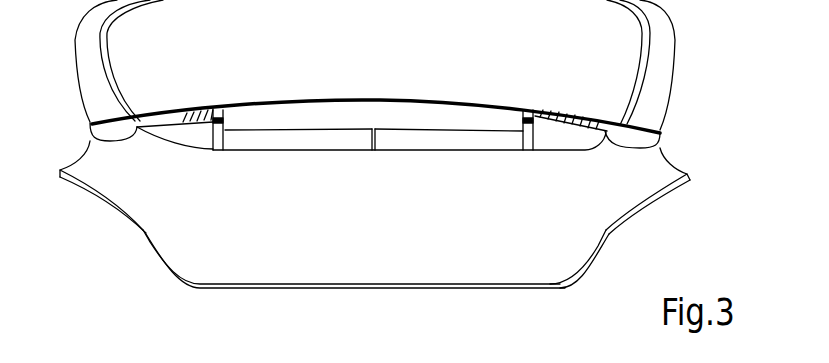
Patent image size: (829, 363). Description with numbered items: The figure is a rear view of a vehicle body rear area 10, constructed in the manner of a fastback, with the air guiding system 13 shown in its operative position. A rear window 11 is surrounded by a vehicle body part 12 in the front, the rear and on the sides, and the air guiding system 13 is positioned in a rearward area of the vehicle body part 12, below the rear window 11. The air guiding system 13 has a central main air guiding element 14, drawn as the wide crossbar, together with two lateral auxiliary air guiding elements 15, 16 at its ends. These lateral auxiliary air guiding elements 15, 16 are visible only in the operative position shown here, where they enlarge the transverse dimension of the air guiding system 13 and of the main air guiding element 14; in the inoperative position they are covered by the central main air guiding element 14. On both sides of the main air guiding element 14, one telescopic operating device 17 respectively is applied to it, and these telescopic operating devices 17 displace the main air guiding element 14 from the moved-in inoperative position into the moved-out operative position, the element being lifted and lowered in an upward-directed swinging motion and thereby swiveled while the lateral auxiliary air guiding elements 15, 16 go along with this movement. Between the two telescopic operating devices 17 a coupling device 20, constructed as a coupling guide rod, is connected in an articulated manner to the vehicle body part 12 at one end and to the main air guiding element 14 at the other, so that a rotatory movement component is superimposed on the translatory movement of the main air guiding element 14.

The vehicle body rear area 10 is at (107, 252).
The rear window 11 is at (375, 59).
The vehicle body part 12 is at (372, 263).
The air guiding system 13 is at (496, 104).
The central main air guiding element 14 is at (276, 100).
The lateral auxiliary air guiding element 15 is at (90, 121).
The lateral auxiliary air guiding element 16 is at (646, 134).
The telescopic operating device 17 is at (226, 133).
The coupling device 20 is at (380, 133).